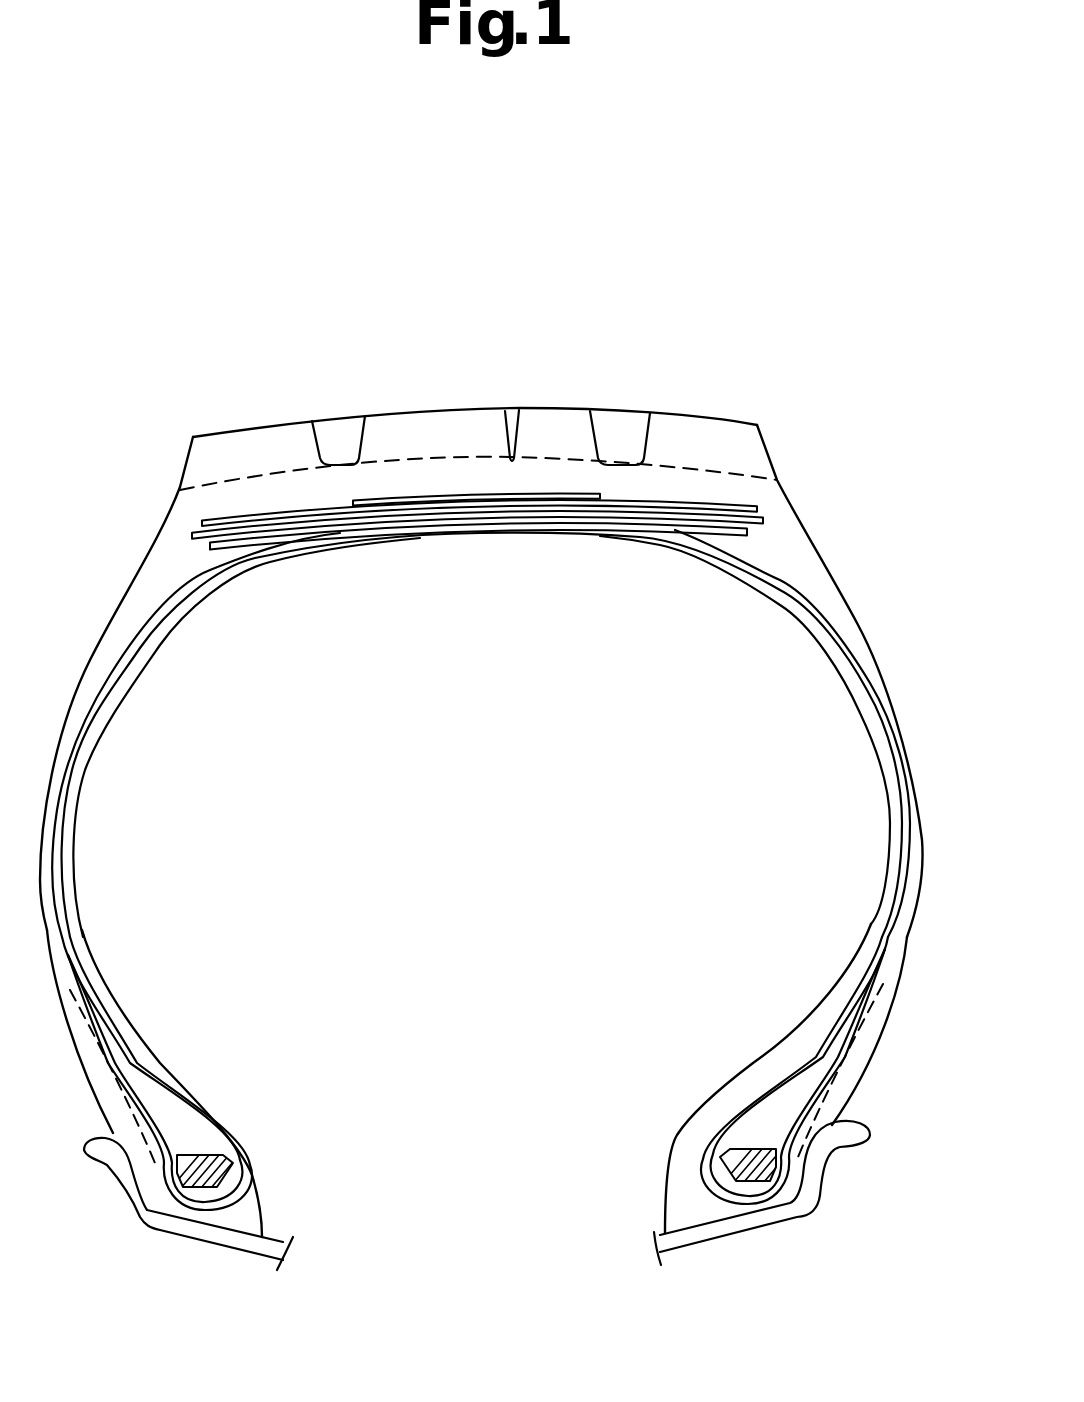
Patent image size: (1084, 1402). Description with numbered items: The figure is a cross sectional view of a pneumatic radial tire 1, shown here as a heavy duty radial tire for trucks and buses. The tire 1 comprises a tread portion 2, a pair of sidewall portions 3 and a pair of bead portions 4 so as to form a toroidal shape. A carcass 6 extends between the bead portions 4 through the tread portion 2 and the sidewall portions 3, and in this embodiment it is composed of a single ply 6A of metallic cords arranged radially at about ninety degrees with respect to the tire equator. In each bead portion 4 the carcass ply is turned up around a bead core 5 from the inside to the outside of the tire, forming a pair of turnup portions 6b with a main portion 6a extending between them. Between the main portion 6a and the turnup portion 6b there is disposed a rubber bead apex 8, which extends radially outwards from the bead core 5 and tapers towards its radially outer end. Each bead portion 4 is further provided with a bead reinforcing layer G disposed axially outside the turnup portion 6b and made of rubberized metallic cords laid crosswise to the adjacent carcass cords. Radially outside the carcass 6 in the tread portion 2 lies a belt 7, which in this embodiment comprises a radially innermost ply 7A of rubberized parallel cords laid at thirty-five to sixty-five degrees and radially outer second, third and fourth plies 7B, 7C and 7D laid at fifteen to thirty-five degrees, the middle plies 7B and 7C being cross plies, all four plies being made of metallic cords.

The pneumatic radial tire 1 is at (742, 398).
The tread portion 2 is at (473, 420).
The sidewall portion 3 is at (858, 593).
The bead portion 4 is at (677, 1137).
The bead core 5 is at (728, 1163).
The carcass 6 is at (682, 846).
The single ply 6A is at (768, 577).
The main portion 6a is at (897, 890).
The turnup portion 6b is at (840, 1058).
The belt 7 is at (412, 272).
The radially innermost ply 7A is at (247, 527).
The second ply 7B is at (280, 520).
The third ply 7C is at (338, 508).
The fourth ply 7D is at (415, 495).
The rubber bead apex 8 is at (777, 1105).
The bead reinforcing layer G is at (840, 1070).